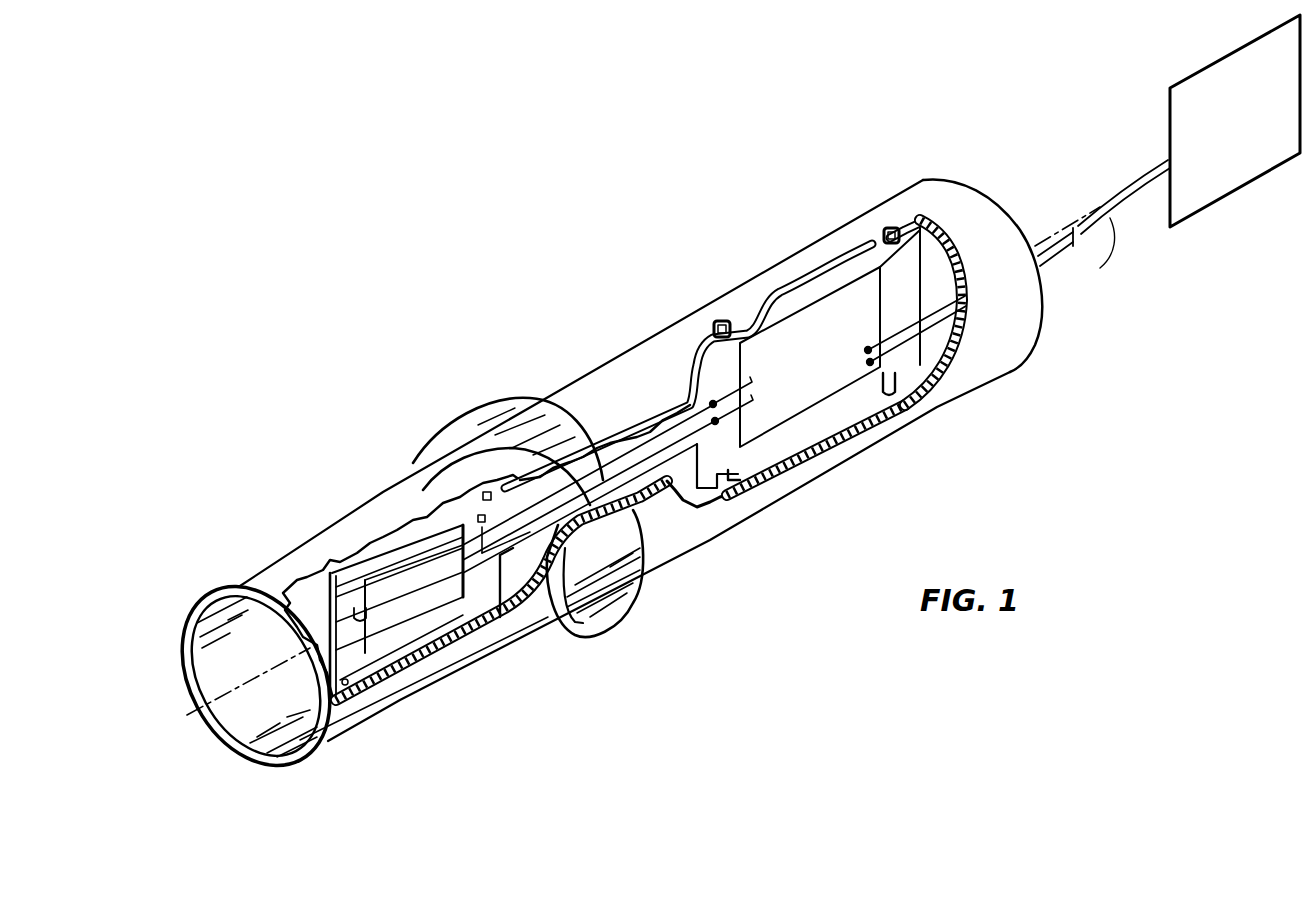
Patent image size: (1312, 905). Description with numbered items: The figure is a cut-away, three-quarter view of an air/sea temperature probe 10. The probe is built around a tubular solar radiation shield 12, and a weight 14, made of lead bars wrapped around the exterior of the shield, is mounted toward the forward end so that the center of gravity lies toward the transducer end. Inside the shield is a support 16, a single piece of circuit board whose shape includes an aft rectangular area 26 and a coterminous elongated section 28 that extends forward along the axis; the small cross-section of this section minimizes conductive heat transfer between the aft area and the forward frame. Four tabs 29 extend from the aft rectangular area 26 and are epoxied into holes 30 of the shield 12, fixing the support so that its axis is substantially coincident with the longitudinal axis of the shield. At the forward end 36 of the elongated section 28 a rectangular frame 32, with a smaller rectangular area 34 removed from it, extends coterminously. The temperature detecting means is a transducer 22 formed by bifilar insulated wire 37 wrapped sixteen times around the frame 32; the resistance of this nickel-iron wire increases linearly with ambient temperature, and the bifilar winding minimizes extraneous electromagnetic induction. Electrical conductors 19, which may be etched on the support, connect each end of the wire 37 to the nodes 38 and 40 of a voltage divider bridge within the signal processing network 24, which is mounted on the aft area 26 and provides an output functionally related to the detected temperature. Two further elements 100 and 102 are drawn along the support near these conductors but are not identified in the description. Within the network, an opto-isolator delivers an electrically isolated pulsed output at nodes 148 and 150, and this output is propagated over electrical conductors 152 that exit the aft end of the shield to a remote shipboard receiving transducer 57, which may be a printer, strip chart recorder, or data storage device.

The air/sea temperature probe 10 is at (590, 298).
The tubular solar radiation shield 12 is at (708, 538).
The weight 14 is at (605, 608).
The support 16 is at (668, 487).
The electrical conductors 19 is at (650, 456).
The transducer 22 is at (398, 647).
The signal processing network 24 is at (812, 412).
The aft rectangular area 26 is at (948, 290).
The elongated section 28 is at (610, 443).
The tabs 29 is at (724, 322).
The holes 30 is at (716, 326).
The rectangular frame 32 is at (377, 537).
The smaller rectangular area 34 is at (433, 570).
The forward end 36 is at (509, 537).
The bifilar insulated wire 37 is at (374, 616).
The node 38 is at (474, 460).
The node 40 is at (495, 492).
The remote shipboard receiving transducer 57 is at (1245, 182).
The first lead 100 is at (713, 402).
The second lead 102 is at (716, 425).
The node 148 is at (935, 378).
The node 150 is at (930, 395).
The electrical conductors 152 is at (1075, 248).